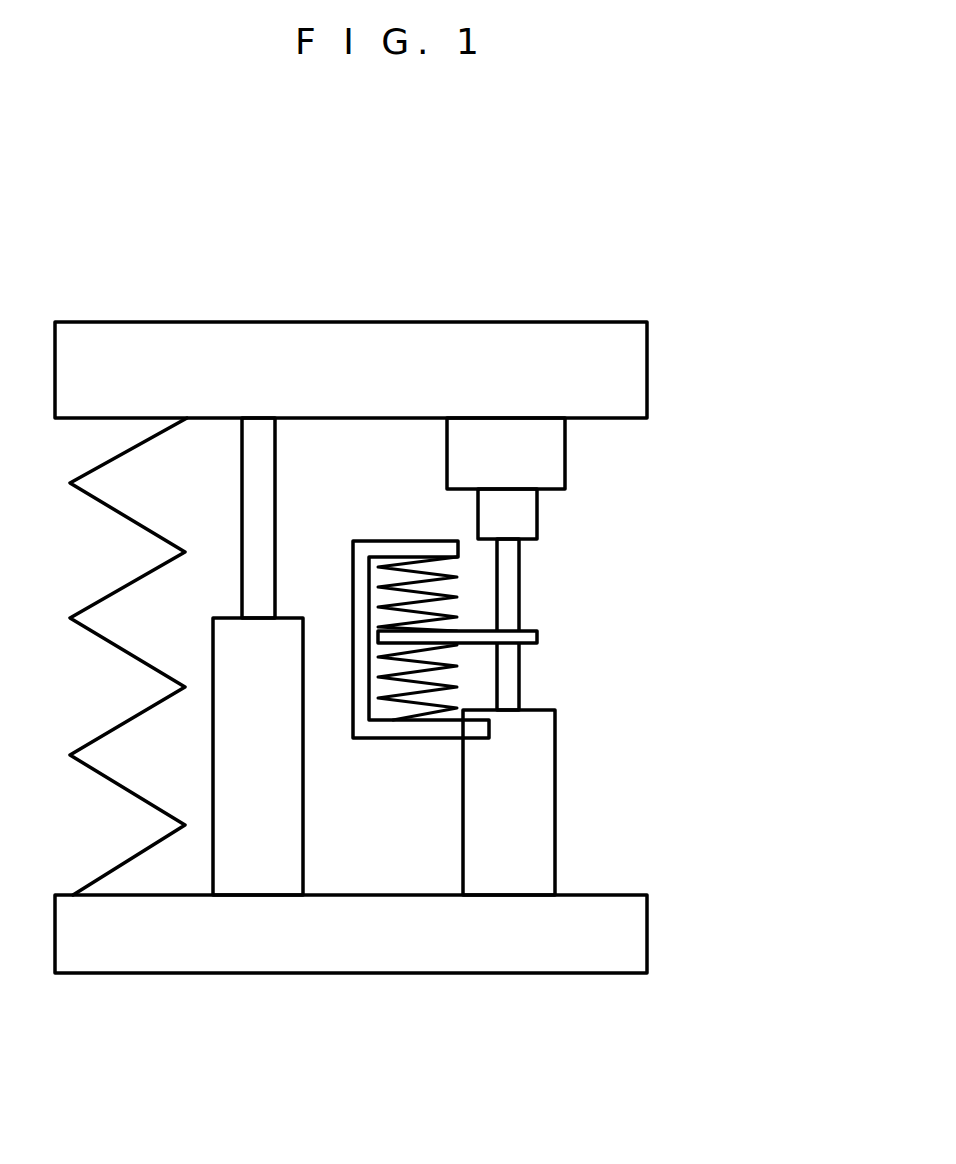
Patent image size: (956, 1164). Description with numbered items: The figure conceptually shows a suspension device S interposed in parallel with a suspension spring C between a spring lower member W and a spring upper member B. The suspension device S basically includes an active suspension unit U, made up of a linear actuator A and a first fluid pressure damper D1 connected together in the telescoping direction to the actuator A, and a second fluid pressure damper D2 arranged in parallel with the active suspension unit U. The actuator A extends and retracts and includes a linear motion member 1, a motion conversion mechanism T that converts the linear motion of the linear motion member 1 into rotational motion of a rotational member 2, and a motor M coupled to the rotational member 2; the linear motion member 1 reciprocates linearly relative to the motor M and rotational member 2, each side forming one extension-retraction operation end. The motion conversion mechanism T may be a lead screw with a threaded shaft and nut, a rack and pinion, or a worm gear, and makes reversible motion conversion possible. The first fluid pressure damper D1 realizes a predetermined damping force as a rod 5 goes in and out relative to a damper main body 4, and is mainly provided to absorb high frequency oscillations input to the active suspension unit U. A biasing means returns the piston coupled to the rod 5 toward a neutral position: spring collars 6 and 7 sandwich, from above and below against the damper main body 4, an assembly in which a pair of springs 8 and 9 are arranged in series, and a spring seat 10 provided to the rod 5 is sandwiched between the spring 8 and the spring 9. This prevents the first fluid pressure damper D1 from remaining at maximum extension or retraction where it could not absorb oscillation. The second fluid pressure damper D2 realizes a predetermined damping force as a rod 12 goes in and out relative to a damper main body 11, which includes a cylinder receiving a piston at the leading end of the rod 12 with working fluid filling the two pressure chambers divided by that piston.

The spring upper member B is at (627, 348).
The spring lower member W is at (646, 898).
The suspension spring C is at (112, 728).
The rod 12 is at (242, 513).
The damper main body 11 is at (213, 703).
The second fluid pressure damper D2 is at (238, 588).
The motor M is at (565, 462).
The rotational member 2 is at (537, 533).
The linear actuator A is at (583, 498).
The suspension device S is at (732, 518).
The linear motion member 1 is at (512, 583).
The motion conversion mechanism T is at (534, 558).
The spring collar 6 is at (400, 543).
The spring 8 is at (397, 575).
The spring 9 is at (388, 700).
The spring seat 10 is at (537, 633).
The rod 5 is at (520, 668).
The damper main body 4 is at (555, 747).
The active suspension unit U is at (582, 702).
The spring collar 7 is at (402, 732).
The first fluid pressure damper D1 is at (565, 808).